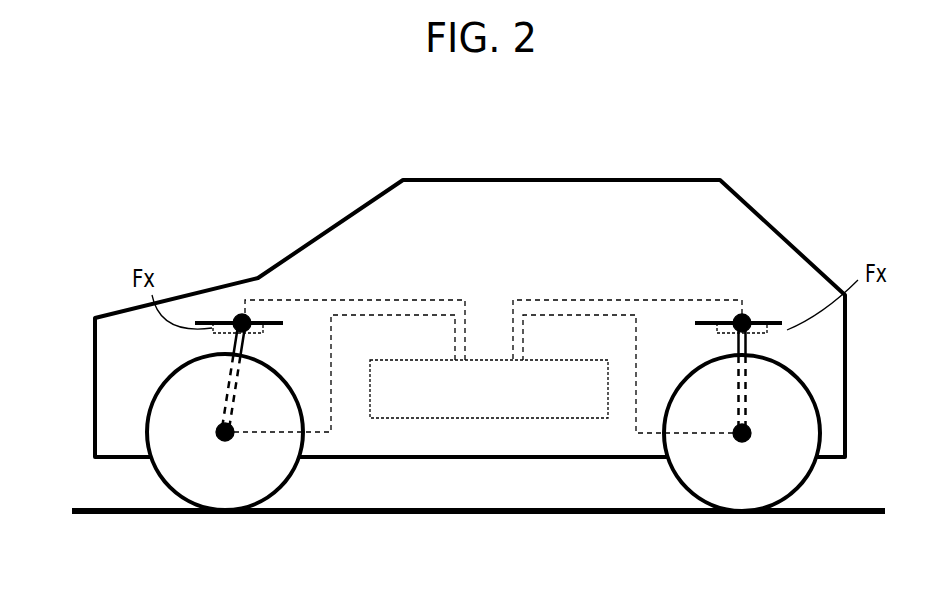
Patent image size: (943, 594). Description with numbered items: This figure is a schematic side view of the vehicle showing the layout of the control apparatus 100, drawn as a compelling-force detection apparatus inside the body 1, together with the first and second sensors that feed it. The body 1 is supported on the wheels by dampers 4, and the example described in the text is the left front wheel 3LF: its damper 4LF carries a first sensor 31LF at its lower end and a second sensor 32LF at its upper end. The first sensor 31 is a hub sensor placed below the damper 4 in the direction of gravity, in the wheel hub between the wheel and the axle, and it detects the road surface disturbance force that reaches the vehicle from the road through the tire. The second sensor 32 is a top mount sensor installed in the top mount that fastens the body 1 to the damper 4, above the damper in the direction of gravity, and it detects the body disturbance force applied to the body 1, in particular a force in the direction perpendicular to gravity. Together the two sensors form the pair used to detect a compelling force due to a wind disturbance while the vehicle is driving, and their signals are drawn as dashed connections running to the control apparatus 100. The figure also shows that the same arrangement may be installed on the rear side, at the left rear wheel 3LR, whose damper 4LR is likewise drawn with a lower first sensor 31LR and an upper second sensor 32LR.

The body 1 is at (213, 330).
The left front wheel 3LF is at (163, 483).
The left rear wheel 3LR is at (677, 482).
The damper 4 is at (483, 349).
The damper corresponding to the left front wheel 4LF is at (229, 378).
The left rear suspension 4LR is at (745, 375).
The first sensor 31 is at (540, 498).
The first sensor 31LF is at (228, 436).
The left rear wheel hub 31LR is at (745, 436).
The second sensor 32 is at (506, 239).
The second sensor 32LF is at (242, 313).
The left rear force sensor 32LR is at (742, 313).
The compelling force detection apparatus 100 is at (487, 420).